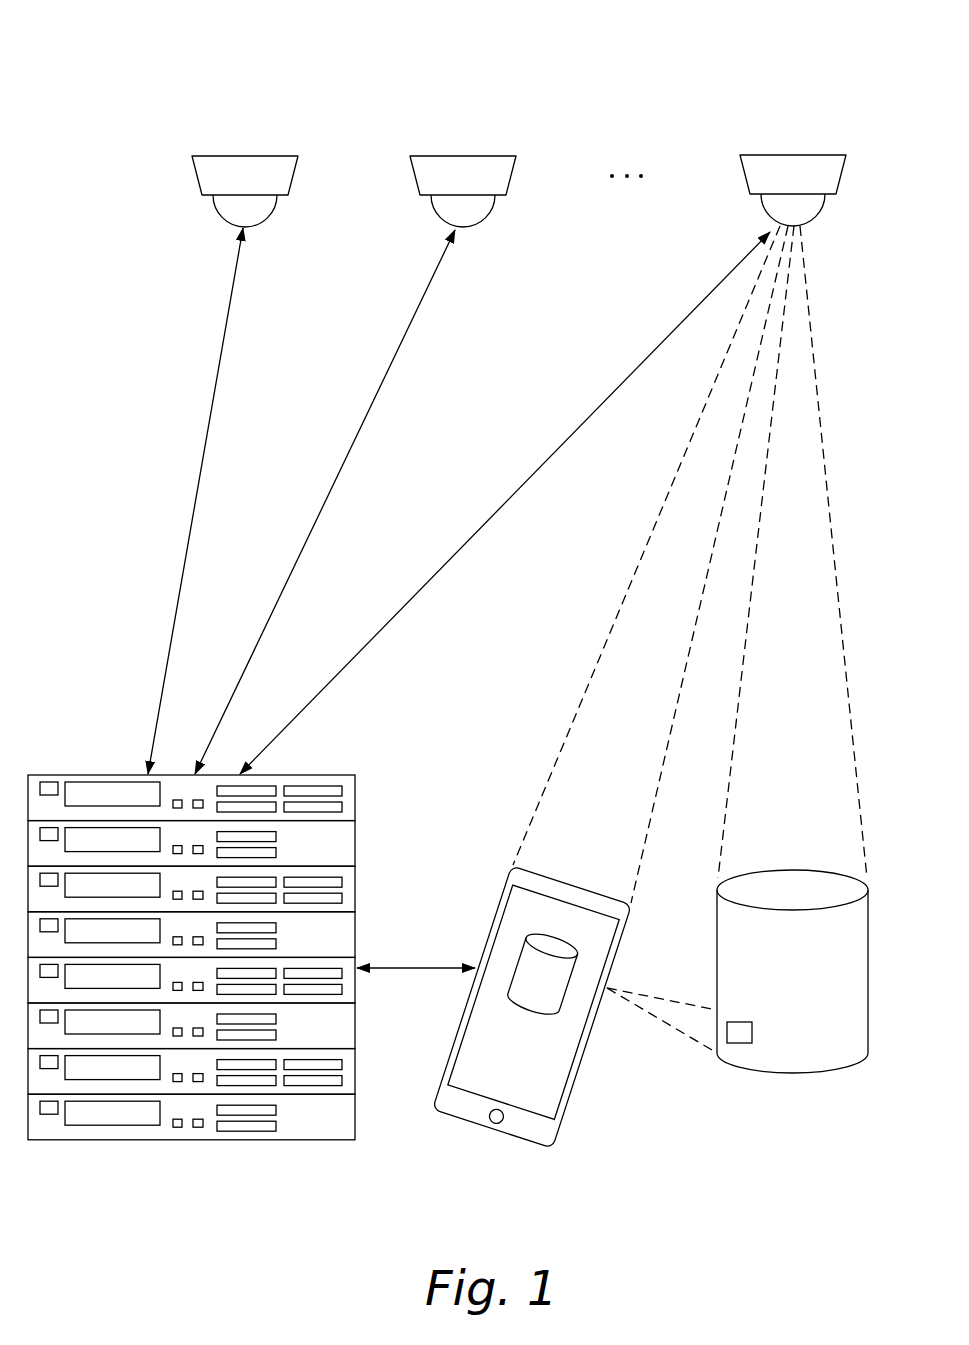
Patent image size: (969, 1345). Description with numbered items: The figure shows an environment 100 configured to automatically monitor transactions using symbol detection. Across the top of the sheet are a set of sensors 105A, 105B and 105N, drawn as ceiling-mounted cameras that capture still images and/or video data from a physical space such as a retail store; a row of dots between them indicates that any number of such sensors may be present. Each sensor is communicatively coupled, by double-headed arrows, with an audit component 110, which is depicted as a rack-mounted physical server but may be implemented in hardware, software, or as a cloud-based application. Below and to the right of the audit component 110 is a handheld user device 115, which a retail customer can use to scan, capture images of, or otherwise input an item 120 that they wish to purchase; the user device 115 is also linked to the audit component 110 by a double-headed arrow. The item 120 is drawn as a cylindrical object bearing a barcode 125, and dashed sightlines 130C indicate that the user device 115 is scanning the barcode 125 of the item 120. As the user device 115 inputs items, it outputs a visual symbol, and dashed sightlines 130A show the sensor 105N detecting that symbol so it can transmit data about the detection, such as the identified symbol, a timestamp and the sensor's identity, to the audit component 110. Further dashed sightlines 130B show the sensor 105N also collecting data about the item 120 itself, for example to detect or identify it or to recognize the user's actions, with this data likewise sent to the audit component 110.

The environment 100 is at (146, 30).
The sensor 105A is at (246, 155).
The sensor 105B is at (461, 155).
The sensor 105N is at (794, 154).
The audit component 110 is at (118, 1141).
The user device 115 is at (525, 1150).
The item 120 is at (792, 1073).
The barcode 125 is at (752, 1031).
The sightlines 130A is at (637, 787).
The sightlines 130B is at (825, 787).
The sightlines 130C is at (677, 1020).